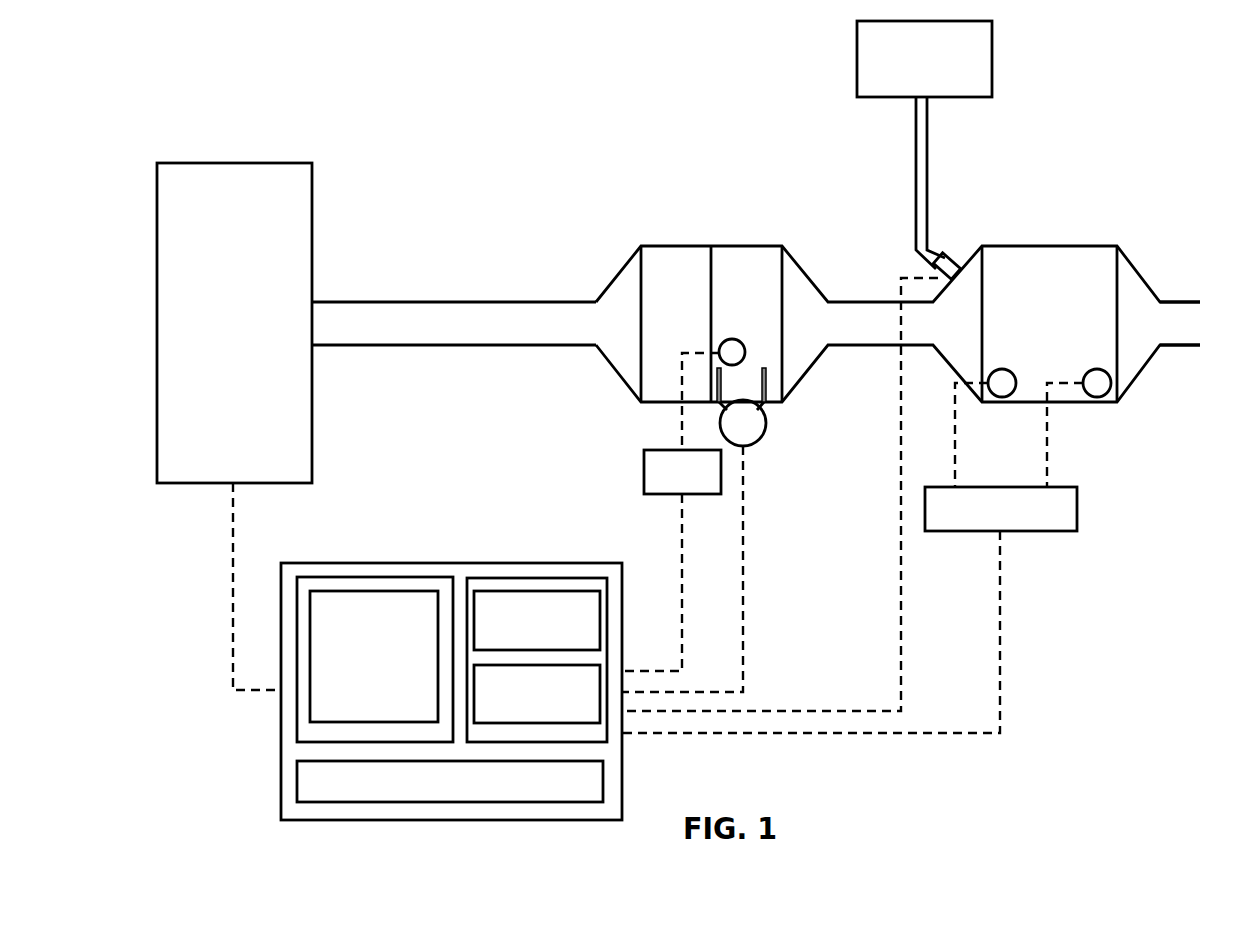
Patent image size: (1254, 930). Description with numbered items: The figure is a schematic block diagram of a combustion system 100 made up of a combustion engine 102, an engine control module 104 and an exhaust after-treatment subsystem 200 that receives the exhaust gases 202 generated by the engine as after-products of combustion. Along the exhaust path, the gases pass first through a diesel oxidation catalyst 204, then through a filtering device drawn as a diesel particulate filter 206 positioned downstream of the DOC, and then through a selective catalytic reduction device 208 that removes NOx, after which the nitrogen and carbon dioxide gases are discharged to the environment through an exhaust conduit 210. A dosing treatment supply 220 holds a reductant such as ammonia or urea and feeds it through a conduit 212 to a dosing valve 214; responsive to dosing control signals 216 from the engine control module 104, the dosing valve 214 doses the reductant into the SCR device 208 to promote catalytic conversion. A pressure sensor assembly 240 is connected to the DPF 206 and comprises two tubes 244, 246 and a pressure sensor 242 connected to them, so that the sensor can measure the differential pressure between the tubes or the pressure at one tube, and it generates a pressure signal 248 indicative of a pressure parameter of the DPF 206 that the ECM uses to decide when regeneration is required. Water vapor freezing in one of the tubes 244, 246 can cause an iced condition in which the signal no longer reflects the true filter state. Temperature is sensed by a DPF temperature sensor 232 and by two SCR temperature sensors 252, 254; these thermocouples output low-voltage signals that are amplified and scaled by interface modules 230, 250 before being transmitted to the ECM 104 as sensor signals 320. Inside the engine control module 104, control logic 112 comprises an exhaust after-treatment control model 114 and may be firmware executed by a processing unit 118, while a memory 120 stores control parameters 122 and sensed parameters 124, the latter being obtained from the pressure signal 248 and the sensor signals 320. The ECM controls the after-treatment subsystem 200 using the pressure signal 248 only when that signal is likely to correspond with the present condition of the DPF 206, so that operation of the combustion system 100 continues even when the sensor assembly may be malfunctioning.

The combustion system 100 is at (402, 124).
The combustion engine 102 is at (242, 146).
The engine control module 104 is at (290, 563).
The control logic 112 is at (335, 577).
The exhaust after-treatment control model 114 is at (385, 591).
The processing unit 118 is at (296, 778).
The memory 120 is at (507, 578).
The control parameters 122 is at (552, 591).
The sensed parameters 124 is at (595, 723).
The exhaust after-treatment subsystem 200 is at (683, 136).
The exhaust gases 202 is at (516, 302).
The diesel oxidation catalyst 204 is at (687, 246).
The diesel particulate filter 206 is at (752, 246).
The selective catalytic reduction device 208 is at (1050, 246).
The exhaust conduit 210 is at (1180, 302).
The conduit 212 is at (927, 152).
The dosing valve 214 is at (955, 256).
The dosing control signals 216 is at (901, 581).
The dosing treatment supply 220 is at (992, 58).
The interface module 230 is at (660, 494).
The DPF temperature sensor 232 is at (724, 361).
The pressure sensor assembly 240 is at (817, 433).
The pressure sensor 242 is at (762, 440).
The tube 244 is at (722, 384).
The tube 246 is at (768, 371).
The pressure signal 248 is at (743, 528).
The interface module 250 is at (1035, 531).
The SCR temperature sensor 252 is at (999, 397).
The SCR temperature sensor 254 is at (1094, 397).
The sensor signals 320 is at (682, 600).